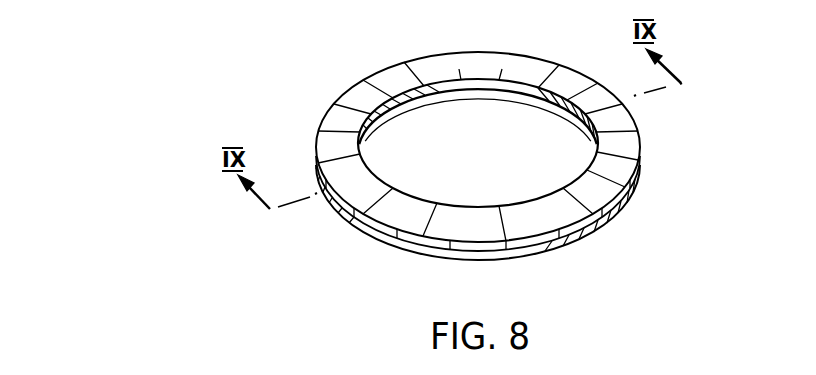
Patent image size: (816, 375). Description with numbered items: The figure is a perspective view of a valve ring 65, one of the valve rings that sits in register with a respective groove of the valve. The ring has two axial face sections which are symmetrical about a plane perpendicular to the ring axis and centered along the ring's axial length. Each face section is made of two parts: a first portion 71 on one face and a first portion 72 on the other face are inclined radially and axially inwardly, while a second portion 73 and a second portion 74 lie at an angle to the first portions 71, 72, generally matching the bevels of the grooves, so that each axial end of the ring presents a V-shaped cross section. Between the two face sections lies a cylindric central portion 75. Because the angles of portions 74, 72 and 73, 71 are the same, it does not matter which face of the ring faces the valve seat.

The valve ring 65 is at (486, 155).
The first portion of first axial face section 71 is at (470, 51).
The first portion of second axial face section 72 is at (469, 98).
The second portion of first axial face section 73 is at (337, 104).
The second portion of second axial face section 74 is at (528, 252).
The cylindric central portion 75 is at (318, 178).